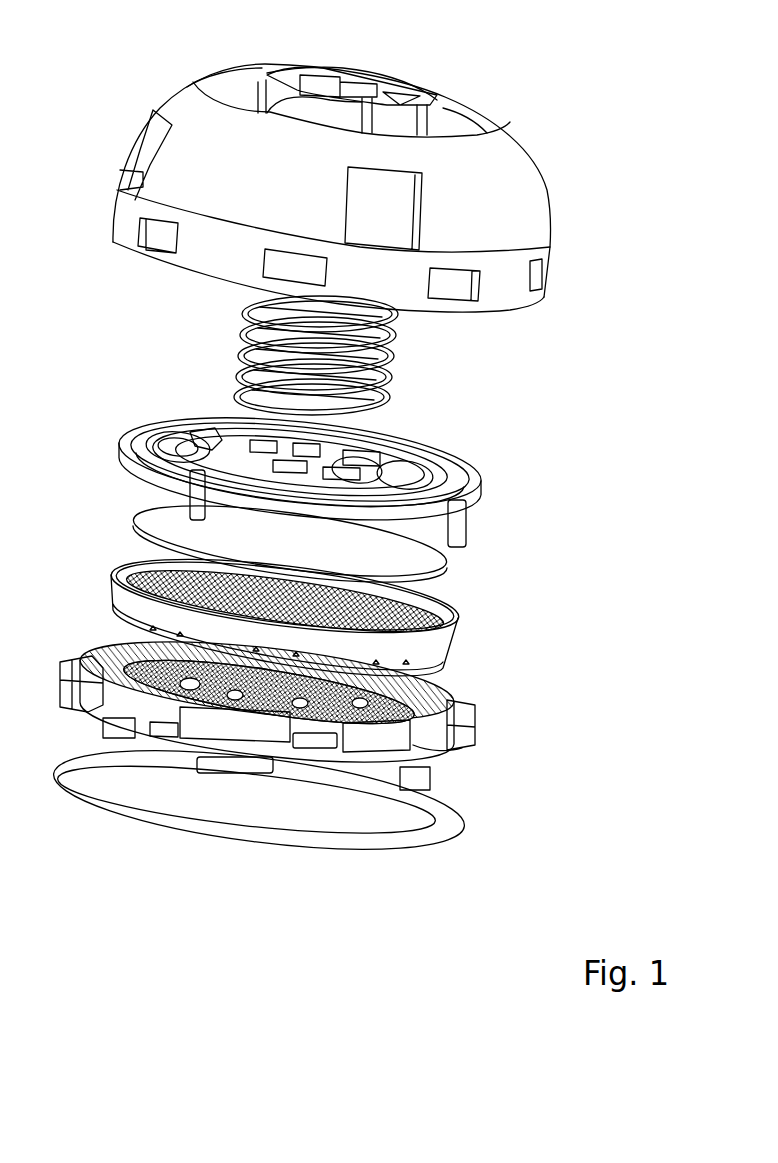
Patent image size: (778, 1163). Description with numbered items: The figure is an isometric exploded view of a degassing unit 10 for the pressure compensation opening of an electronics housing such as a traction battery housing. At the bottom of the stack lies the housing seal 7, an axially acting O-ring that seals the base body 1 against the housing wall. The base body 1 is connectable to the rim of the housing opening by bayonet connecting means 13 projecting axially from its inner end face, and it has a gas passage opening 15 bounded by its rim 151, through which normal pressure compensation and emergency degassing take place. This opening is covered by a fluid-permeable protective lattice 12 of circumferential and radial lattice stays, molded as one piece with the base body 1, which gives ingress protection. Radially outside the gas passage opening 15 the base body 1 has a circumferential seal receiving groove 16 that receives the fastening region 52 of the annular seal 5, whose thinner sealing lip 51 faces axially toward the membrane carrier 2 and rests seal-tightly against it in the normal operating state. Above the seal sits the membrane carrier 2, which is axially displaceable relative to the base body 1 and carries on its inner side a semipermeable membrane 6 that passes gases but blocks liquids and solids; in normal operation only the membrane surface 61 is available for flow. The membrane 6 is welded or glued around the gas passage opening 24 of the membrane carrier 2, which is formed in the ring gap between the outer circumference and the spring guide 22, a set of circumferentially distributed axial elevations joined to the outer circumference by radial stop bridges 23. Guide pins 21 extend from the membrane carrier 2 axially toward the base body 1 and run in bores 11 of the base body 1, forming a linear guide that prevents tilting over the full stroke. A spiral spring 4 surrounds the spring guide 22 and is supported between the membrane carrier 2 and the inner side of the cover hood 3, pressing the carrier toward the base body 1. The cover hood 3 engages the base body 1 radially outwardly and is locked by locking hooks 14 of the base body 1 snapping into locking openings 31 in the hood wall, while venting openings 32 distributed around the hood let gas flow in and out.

The degassing unit 10 is at (152, 62).
The cover hood 3 is at (554, 215).
The locking openings 31 is at (150, 240).
The venting opening 32 is at (476, 118).
The spring element/spiral spring 4 is at (240, 351).
The membrane carrier 2 is at (118, 445).
The guide pin 21 is at (186, 500).
The spring guide 22 is at (355, 461).
The stop bridge 23 is at (205, 437).
The gas passage opening of the membrane carrier 24 is at (178, 452).
The semipermeable membrane 6 is at (450, 563).
The outer membrane surface 61 is at (310, 556).
The seal/lip seal 5 is at (112, 588).
The sealing lip 51 is at (462, 618).
The fastening region of the seal 52 is at (442, 662).
The base body 1 is at (480, 720).
The bore 11 is at (435, 724).
The protective lattice 12 is at (152, 668).
The bayonet connecting means 13 is at (257, 775).
The locking hook 14 is at (322, 750).
The gas passage opening 15 is at (187, 690).
The rim of gas passage opening 151 is at (398, 722).
The seal receiving groove of the base body 16 is at (118, 666).
The housing seal 7 is at (434, 851).